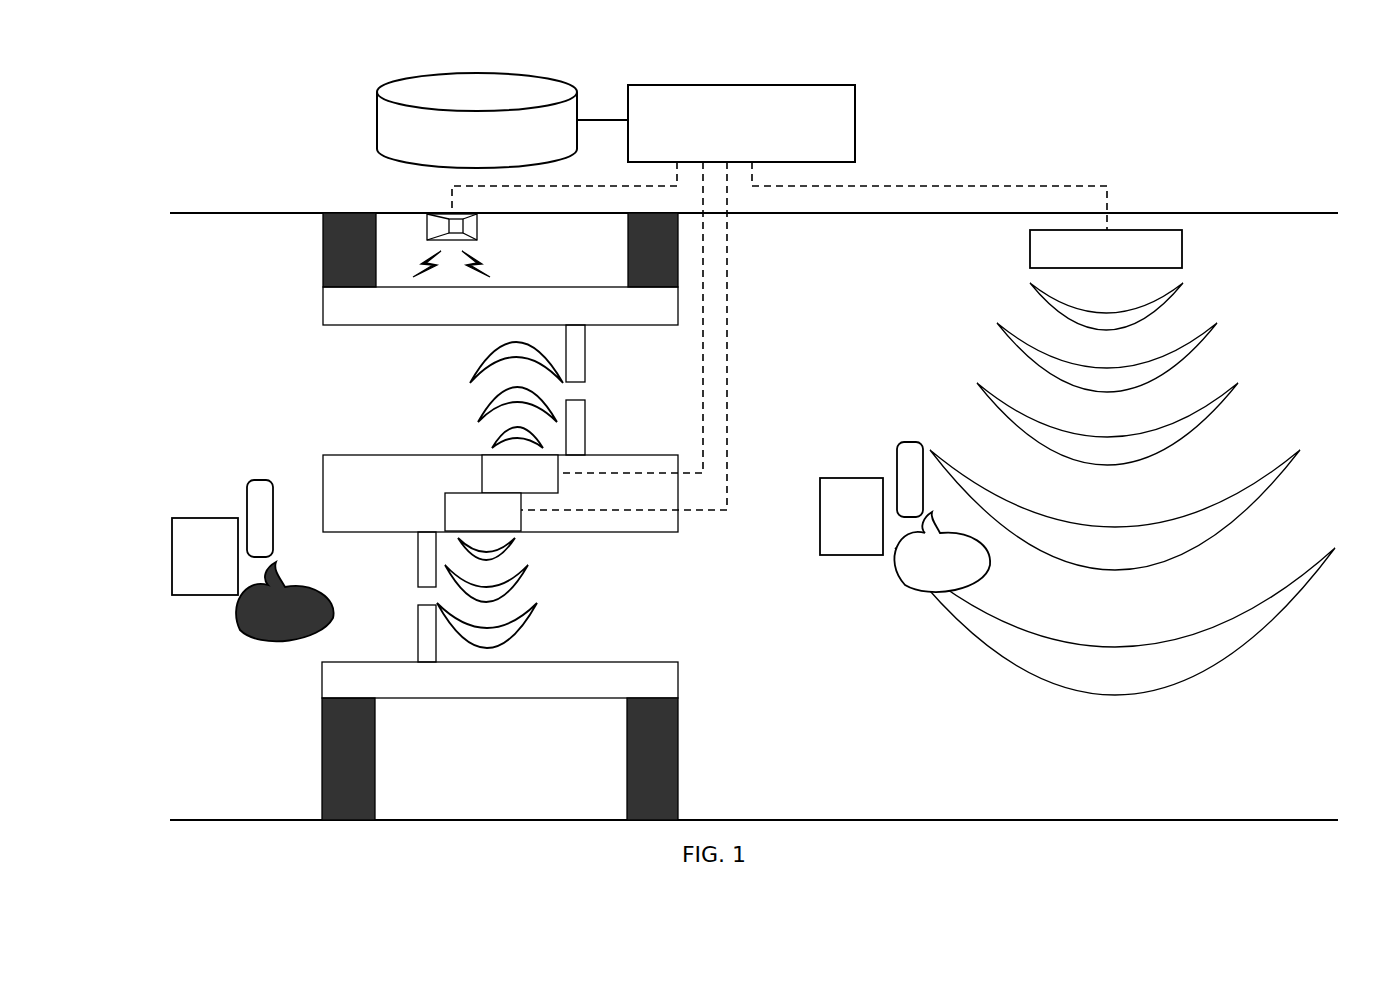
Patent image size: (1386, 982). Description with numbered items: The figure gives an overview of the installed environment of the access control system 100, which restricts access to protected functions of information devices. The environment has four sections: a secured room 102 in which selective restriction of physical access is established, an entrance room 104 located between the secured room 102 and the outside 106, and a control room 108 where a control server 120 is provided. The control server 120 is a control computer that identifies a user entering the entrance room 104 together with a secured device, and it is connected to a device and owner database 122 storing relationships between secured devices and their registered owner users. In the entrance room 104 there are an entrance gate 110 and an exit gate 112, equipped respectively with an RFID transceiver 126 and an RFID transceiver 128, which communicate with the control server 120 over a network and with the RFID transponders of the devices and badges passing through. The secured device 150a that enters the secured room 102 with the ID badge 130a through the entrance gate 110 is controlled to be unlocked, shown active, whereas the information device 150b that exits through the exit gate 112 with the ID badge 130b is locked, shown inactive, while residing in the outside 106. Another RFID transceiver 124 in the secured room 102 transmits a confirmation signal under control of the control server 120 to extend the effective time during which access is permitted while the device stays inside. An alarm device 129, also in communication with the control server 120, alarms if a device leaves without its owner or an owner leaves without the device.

The access control system 100 is at (178, 138).
The secured room 102 is at (742, 808).
The entrance room 104 is at (485, 808).
The outside 106 is at (257, 808).
The control room 108 is at (1193, 197).
The entrance gate 110 is at (322, 364).
The exit gate 112 is at (679, 609).
The control server 120 is at (855, 127).
The device and owner database 122 is at (377, 122).
The RFID transceiver 124 is at (1030, 253).
The RFID transceiver 126 is at (482, 480).
The RFID transceiver 128 is at (445, 515).
The alarm device 129 is at (477, 224).
The ID badge 130a is at (850, 478).
The ID badge 130b is at (200, 518).
The secured device 150a is at (913, 442).
The information device 150b is at (263, 480).